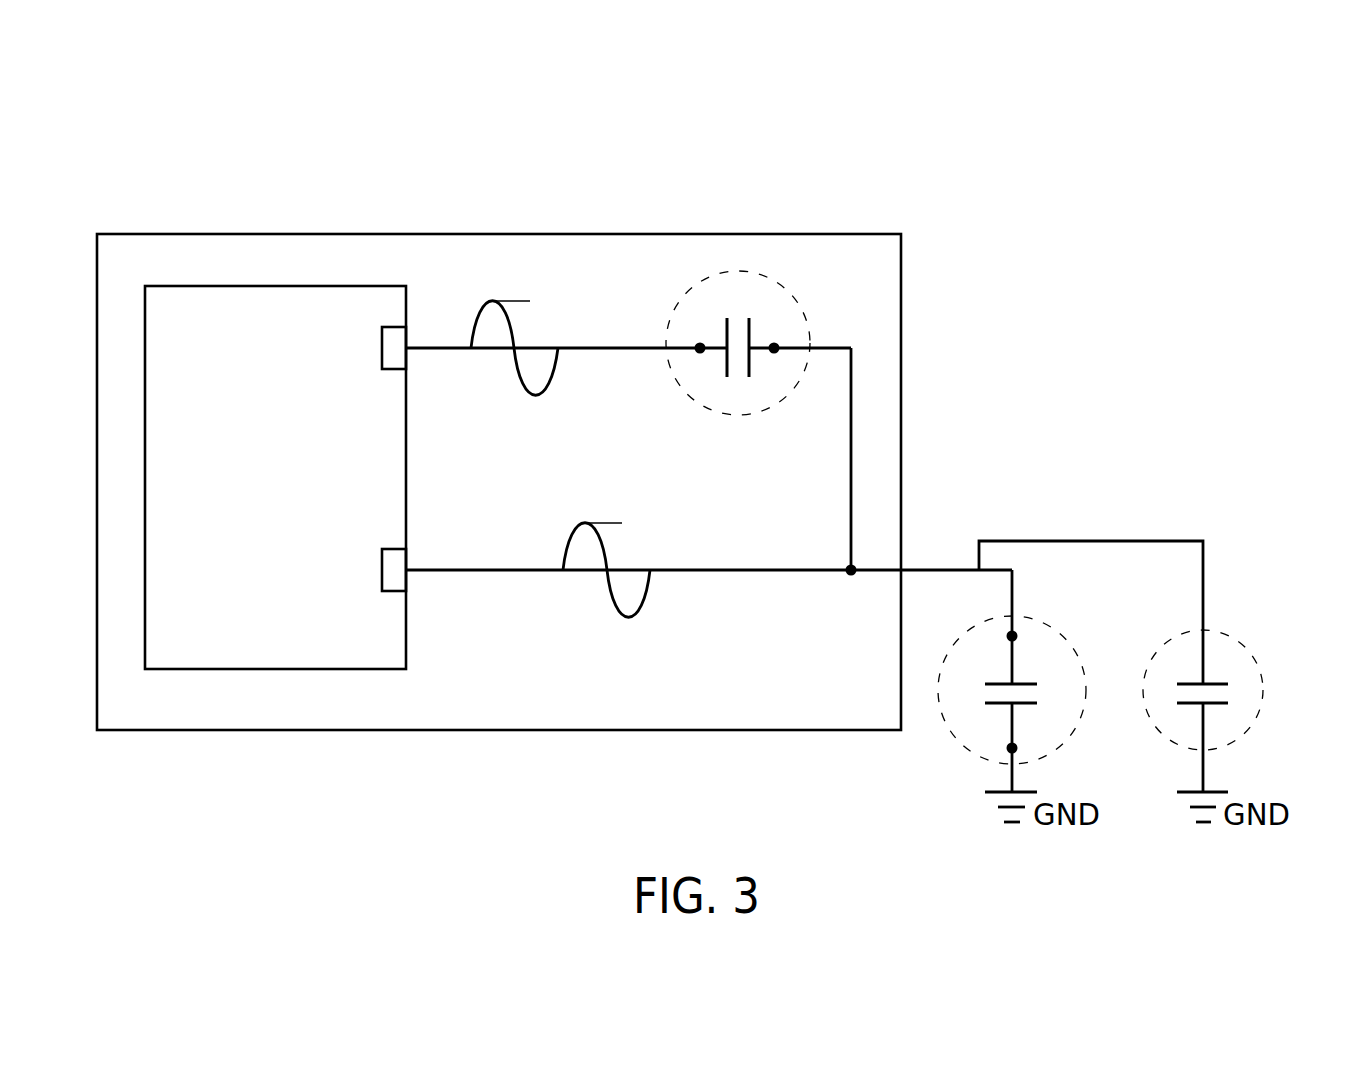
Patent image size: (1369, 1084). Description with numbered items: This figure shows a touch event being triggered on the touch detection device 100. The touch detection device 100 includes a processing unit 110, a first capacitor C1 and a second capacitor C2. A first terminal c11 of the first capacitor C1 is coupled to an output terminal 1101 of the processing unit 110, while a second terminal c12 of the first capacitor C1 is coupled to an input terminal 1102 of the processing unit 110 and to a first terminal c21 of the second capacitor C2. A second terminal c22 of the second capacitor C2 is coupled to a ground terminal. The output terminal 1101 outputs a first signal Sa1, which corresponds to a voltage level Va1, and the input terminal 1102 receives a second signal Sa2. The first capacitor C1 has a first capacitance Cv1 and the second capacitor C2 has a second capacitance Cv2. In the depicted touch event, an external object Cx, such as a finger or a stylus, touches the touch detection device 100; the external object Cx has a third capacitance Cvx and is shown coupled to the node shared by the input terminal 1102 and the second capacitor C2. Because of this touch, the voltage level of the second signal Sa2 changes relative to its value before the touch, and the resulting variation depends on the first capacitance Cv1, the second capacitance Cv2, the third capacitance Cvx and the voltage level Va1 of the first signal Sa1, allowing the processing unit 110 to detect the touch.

The touch detection device 100 is at (1200, 150).
The processing unit 110 is at (407, 627).
The output terminal 1101 is at (381, 357).
The input terminal 1102 is at (381, 578).
The first signal Sa1 is at (552, 279).
The voltage level of the first signal Va1 is at (524, 304).
The second signal Sa2 is at (650, 502).
The first capacitor C1 is at (734, 365).
The first terminal of the first capacitor c11 is at (692, 332).
The second terminal of the first capacitor c12 is at (777, 332).
The first capacitance Cv1 is at (777, 400).
The second capacitor C2 is at (992, 694).
The first terminal of the second capacitor c21 is at (1035, 651).
The second terminal of the second capacitor c22 is at (1035, 736).
The second capacitance Cv2 is at (1048, 628).
The external object Cx is at (1183, 694).
The third capacitance Cvx is at (1232, 645).